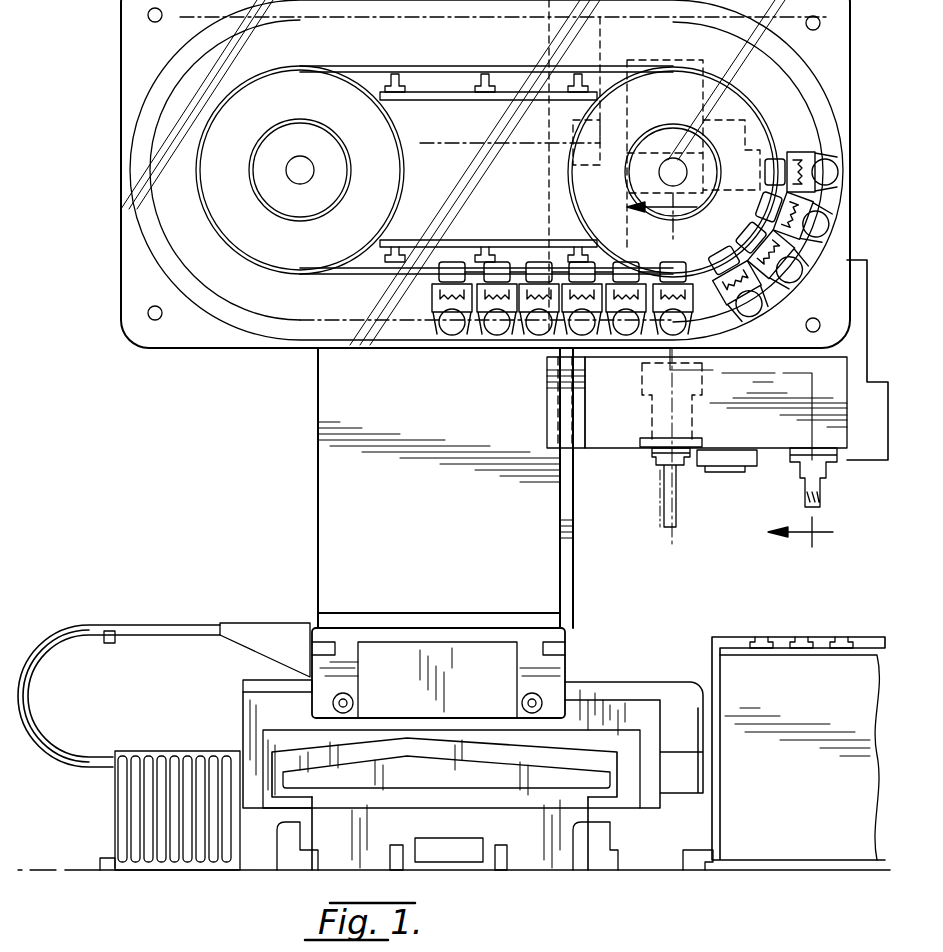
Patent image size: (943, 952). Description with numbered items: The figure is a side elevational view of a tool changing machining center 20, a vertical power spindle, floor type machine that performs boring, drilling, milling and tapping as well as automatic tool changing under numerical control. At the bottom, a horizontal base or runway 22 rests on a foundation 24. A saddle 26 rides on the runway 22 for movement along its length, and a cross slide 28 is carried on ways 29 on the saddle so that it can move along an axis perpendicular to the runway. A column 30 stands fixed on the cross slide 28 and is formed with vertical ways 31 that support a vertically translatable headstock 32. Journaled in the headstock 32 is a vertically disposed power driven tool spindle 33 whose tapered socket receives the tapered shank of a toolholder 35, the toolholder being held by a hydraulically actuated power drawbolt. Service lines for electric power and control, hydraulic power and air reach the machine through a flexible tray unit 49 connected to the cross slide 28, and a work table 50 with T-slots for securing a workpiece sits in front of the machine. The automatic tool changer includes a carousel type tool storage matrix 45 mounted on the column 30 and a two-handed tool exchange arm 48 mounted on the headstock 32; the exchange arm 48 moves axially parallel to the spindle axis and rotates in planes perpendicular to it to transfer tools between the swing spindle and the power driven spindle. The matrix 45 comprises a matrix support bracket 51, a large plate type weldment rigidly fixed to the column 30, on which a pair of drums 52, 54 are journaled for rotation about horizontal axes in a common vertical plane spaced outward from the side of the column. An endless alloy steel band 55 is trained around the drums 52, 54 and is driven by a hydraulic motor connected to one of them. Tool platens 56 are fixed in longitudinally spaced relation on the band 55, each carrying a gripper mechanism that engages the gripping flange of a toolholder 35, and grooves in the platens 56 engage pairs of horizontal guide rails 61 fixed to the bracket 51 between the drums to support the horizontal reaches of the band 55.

The machining center 20 is at (196, 434).
The horizontal base or runway 22 is at (480, 832).
The foundation 24 is at (650, 872).
The saddle 26 is at (243, 734).
The cross slide 28 is at (566, 662).
The ways 29 is at (243, 684).
The column 30 is at (458, 526).
The vertical ways 31 is at (574, 582).
The headstock 32 is at (548, 418).
The tool spindle 33 is at (655, 434).
The toolholder 35 is at (498, 342).
The tool storage matrix 45 is at (117, 70).
The tool exchange arm 48 is at (718, 470).
The flexible tray unit 49 is at (93, 625).
The work table 50 is at (830, 807).
The matrix support bracket 51 is at (130, 257).
The drum 52 is at (830, 77).
The drum 54 is at (250, 238).
The alloy steel band 55 is at (330, 280).
The tool platens 56 is at (497, 262).
The horizontal guide rails 61 is at (433, 96).